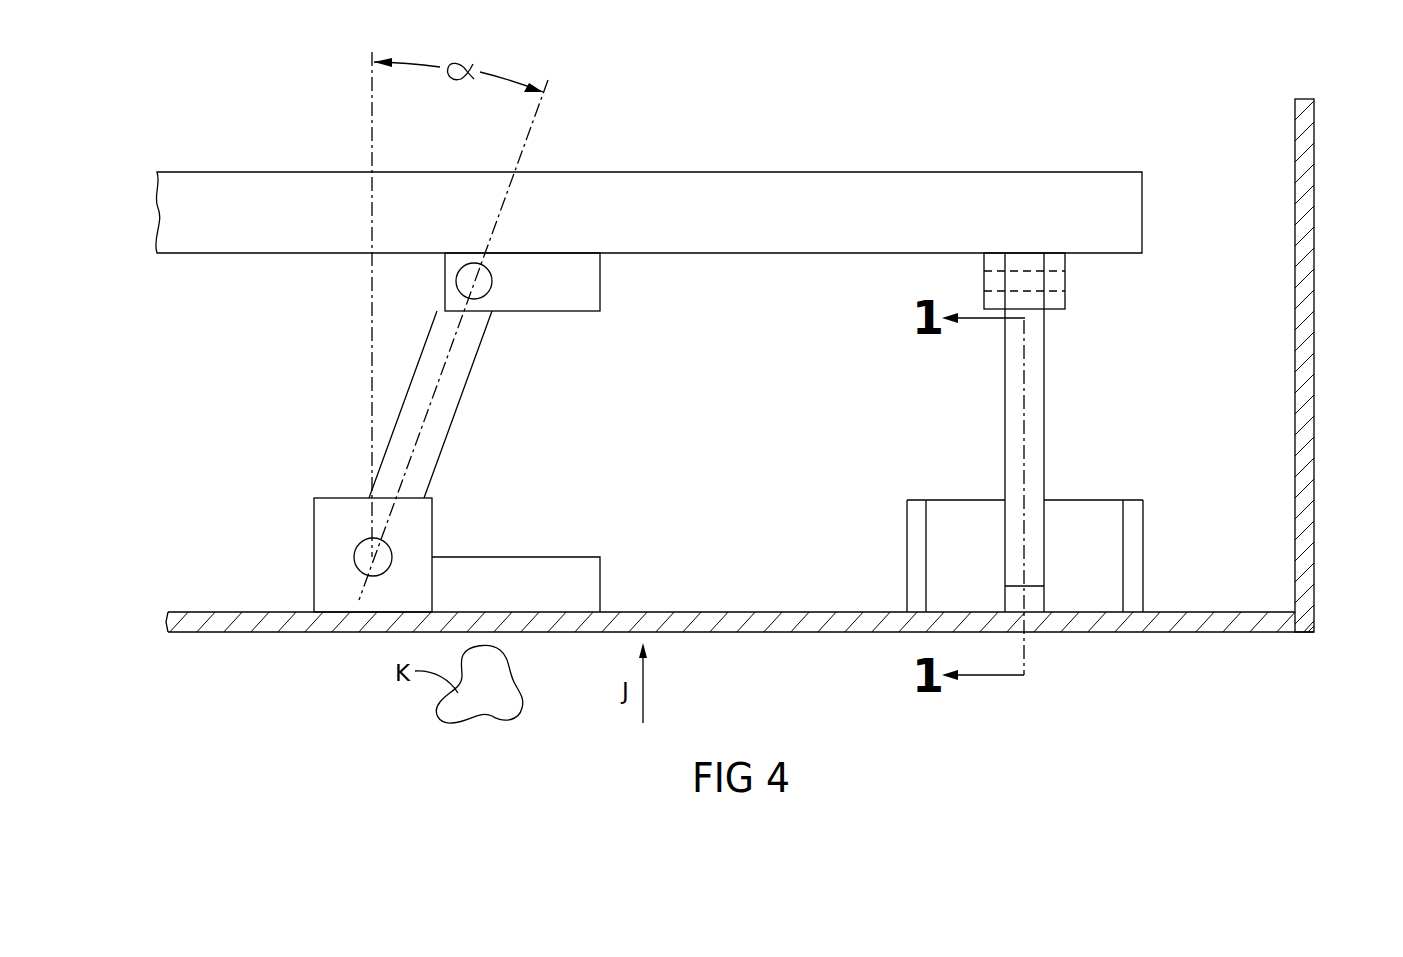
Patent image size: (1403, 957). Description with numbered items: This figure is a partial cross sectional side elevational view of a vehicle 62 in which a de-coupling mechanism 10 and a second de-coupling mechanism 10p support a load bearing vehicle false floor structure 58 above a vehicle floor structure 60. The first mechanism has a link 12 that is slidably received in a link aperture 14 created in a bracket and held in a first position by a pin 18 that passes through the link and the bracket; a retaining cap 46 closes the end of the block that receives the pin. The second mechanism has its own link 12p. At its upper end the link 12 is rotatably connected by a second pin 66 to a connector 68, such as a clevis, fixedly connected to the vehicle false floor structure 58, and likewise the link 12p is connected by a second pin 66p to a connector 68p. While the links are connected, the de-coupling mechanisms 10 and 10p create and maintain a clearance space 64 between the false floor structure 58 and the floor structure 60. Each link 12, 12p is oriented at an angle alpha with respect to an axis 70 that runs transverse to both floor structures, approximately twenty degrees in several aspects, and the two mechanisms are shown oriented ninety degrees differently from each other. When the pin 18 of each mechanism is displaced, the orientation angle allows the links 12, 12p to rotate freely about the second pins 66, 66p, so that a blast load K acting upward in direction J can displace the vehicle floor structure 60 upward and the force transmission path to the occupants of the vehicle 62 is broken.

The de-coupling mechanism 10 is at (452, 517).
The de-coupling mechanism 10p is at (870, 498).
The link 12 is at (450, 403).
The link 12p is at (1037, 438).
The link aperture 14 is at (1033, 607).
The pin 18 is at (361, 558).
The retaining cap 46 is at (327, 524).
The vehicle false floor structure 58 is at (1032, 186).
The vehicle floor structure 60 is at (742, 623).
The vehicle 62 is at (1324, 235).
The clearance space 64 is at (842, 325).
The second pin 66 is at (483, 284).
The second pin 66p is at (1057, 280).
The connector 68 is at (598, 289).
The connector 68p is at (1055, 302).
The axis 70 is at (371, 396).